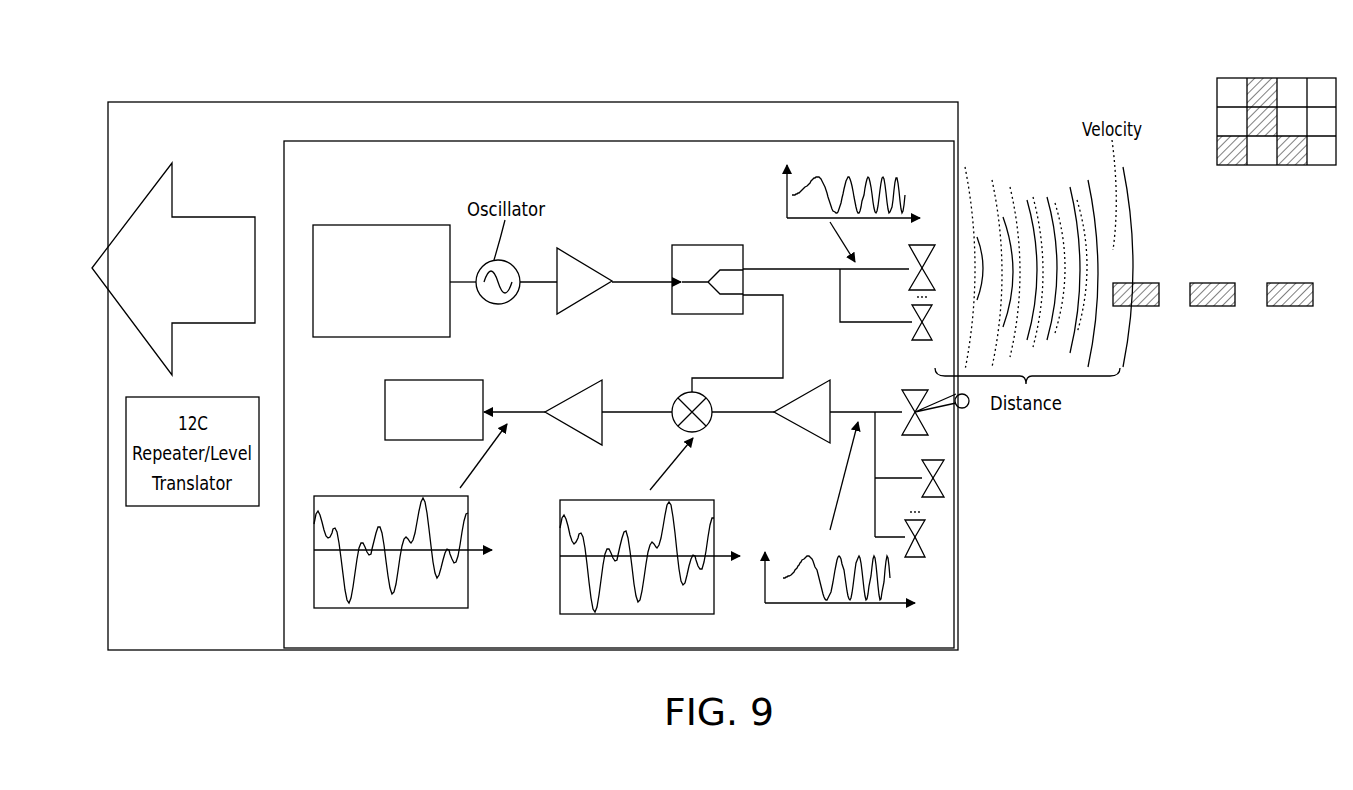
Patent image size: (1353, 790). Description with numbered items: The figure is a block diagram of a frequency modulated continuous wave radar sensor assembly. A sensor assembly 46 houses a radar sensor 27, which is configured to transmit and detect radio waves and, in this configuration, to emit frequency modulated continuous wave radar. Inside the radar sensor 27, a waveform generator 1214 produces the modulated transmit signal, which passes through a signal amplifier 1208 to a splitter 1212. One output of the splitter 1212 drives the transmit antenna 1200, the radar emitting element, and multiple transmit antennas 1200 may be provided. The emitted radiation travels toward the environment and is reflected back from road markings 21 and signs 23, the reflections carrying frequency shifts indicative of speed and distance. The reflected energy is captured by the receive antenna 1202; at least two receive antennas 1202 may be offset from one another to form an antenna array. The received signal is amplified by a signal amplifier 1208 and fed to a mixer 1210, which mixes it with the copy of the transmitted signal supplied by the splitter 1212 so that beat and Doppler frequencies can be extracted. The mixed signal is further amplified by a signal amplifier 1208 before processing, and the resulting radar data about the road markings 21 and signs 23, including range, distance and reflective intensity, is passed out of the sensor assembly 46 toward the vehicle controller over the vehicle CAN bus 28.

The radar sensor 27 is at (323, 140).
The sensor assembly 46 is at (406, 102).
The vehicle CAN bus 28 is at (222, 217).
The waveform generator 1214 is at (316, 338).
The signal amplifier 1208 is at (582, 252).
The splitter 1212 is at (702, 245).
The mixer 1210 is at (700, 432).
The transmit antenna 1200 is at (880, 352).
The receive antenna 1202 is at (927, 425).
The road markings 21 is at (1138, 306).
The signs 23 is at (1296, 78).